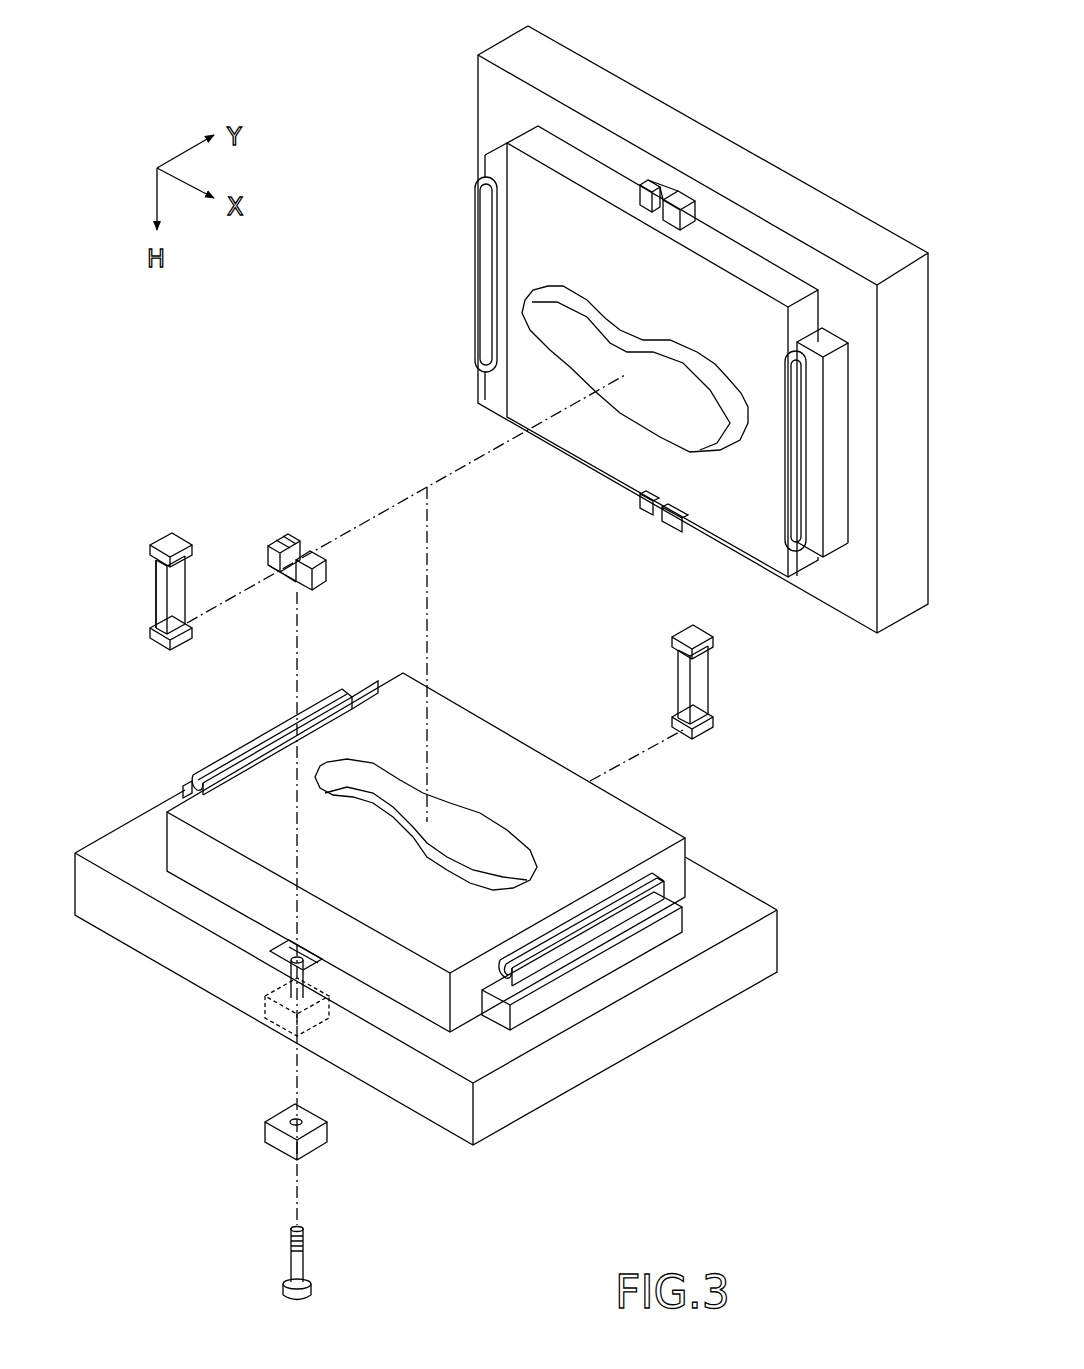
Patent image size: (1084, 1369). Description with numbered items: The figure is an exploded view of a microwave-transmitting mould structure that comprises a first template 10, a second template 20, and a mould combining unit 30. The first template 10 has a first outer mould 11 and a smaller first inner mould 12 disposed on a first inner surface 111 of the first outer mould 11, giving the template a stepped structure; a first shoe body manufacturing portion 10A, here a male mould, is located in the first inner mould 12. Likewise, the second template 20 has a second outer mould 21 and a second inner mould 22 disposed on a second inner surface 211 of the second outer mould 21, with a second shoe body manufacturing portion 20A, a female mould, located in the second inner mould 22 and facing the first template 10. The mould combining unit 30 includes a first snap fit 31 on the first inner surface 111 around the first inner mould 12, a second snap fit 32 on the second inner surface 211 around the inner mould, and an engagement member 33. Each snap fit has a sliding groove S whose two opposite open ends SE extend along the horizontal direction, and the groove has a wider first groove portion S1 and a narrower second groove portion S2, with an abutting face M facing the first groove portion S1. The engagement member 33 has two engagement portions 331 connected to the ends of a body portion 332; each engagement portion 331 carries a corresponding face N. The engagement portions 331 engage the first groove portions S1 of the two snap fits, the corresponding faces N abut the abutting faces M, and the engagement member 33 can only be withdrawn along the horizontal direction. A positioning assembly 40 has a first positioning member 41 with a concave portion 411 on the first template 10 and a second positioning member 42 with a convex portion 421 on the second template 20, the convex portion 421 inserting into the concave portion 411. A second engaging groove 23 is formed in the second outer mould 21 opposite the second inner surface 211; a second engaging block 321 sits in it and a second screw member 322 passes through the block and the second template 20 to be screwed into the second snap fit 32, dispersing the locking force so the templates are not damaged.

The first template 10 is at (712, 75).
The first outer mould 11 is at (588, 77).
The first inner surface 111 is at (487, 100).
The first inner mould 12 is at (717, 500).
The first shoe body manufacturing portion 10A is at (623, 410).
The first snap fit 31 is at (688, 212).
The positioning assembly 40 is at (826, 735).
The first positioning member 41 is at (840, 535).
The concave portion 411 is at (797, 512).
The second positioning member 42 is at (667, 925).
The convex portion 421 is at (633, 883).
The second template 20 is at (150, 1008).
The second outer mould 21 is at (737, 972).
The second inner surface 211 is at (117, 848).
The second inner mould 22 is at (472, 730).
The second shoe body manufacturing portion 20A is at (509, 835).
The second engaging groove 23 is at (277, 1015).
The mould combining unit 30 is at (208, 535).
The second snap fit 32 is at (323, 567).
The sliding groove S is at (318, 433).
The first groove portion S1 is at (270, 555).
The second groove portion S2 is at (295, 534).
The abutting face M is at (313, 588).
The open end SE is at (290, 580).
The engagement member 33 is at (135, 595).
The engagement portion 331 is at (160, 557).
The body portion 332 is at (160, 600).
The corresponding face N is at (152, 570).
The second engaging block 321 is at (278, 1138).
The second screw member 322 is at (294, 1260).